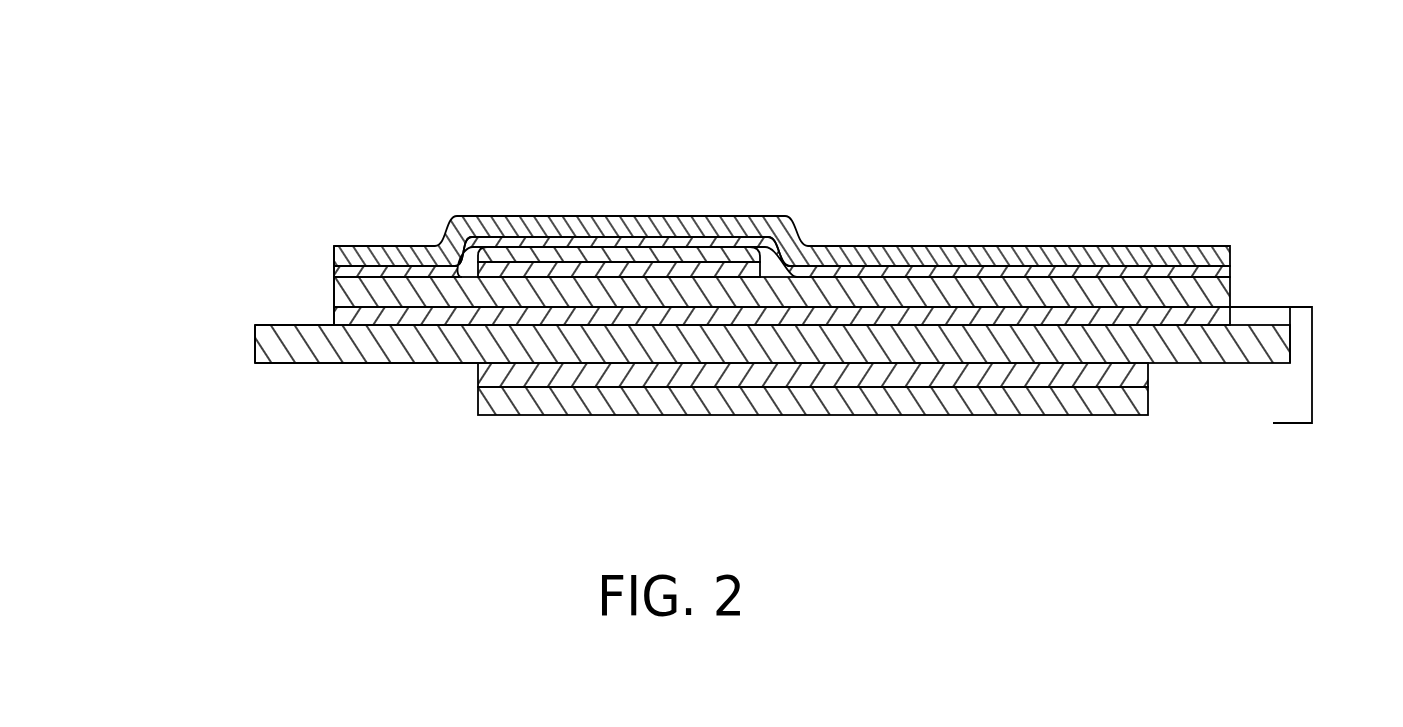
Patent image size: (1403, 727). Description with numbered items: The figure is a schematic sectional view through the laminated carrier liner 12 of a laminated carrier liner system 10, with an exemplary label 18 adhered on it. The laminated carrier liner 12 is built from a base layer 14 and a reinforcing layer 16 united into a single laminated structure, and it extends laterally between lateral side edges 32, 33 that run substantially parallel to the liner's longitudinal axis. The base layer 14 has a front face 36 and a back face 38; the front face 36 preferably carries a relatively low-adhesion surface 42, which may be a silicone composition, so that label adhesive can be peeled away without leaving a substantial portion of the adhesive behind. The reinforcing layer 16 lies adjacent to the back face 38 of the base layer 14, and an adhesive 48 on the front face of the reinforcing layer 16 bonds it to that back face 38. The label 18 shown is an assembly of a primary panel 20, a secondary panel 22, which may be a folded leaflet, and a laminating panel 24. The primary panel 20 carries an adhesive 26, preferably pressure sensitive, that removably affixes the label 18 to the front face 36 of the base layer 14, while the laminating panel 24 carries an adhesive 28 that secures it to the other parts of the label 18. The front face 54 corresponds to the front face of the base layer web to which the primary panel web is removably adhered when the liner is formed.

The laminated carrier liner system 10 is at (223, 187).
The laminated carrier liner 12 is at (1312, 365).
The base layer 14 is at (1267, 332).
The reinforcing layer 16 is at (863, 403).
The label 18 is at (1007, 128).
The primary panel 20 is at (927, 293).
The secondary panel 22 is at (677, 258).
The laminating panel 24 is at (467, 218).
The adhesive 26 is at (1075, 318).
The adhesive 28 is at (581, 238).
The lateral side edge 32 is at (1293, 337).
The lateral side edge 33 is at (255, 343).
The front face 36 is at (276, 324).
The back face 38 is at (273, 365).
The low-adhesion surface 42 is at (312, 324).
The adhesive 48 is at (478, 373).
The front face 54 is at (1247, 323).